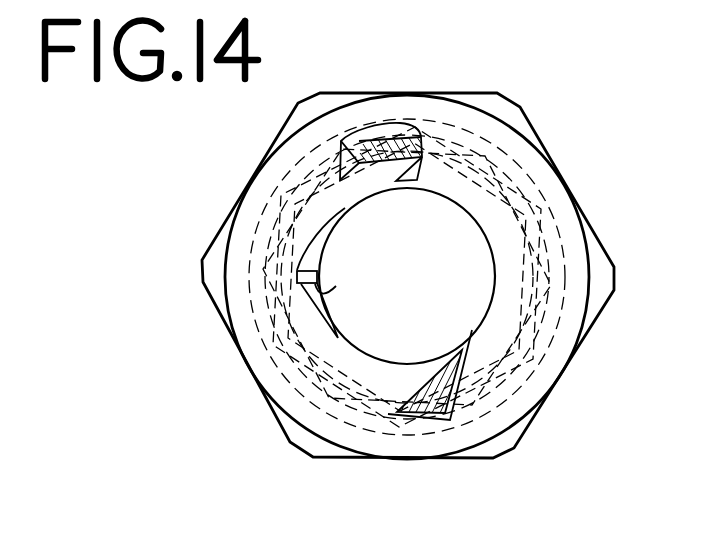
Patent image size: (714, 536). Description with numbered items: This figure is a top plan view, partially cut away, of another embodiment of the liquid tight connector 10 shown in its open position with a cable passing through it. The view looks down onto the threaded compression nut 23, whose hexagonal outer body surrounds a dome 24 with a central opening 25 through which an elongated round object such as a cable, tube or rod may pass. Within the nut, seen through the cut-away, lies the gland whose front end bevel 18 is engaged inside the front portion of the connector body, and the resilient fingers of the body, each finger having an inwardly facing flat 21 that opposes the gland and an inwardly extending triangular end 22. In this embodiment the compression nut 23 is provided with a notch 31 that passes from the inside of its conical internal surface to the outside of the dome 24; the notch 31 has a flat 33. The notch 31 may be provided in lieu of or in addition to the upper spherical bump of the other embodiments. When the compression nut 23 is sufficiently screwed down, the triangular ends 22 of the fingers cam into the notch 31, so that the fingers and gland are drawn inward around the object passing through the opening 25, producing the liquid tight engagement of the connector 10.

The liquid tight connector 10 is at (583, 190).
The front end bevel 18 is at (362, 175).
The flat 21 is at (421, 137).
The triangular end 22 is at (450, 420).
The threaded compression nut 23 is at (533, 123).
The dome 24 is at (530, 183).
The opening 25 is at (460, 313).
The notch 31 is at (297, 272).
The flat 33 is at (338, 281).